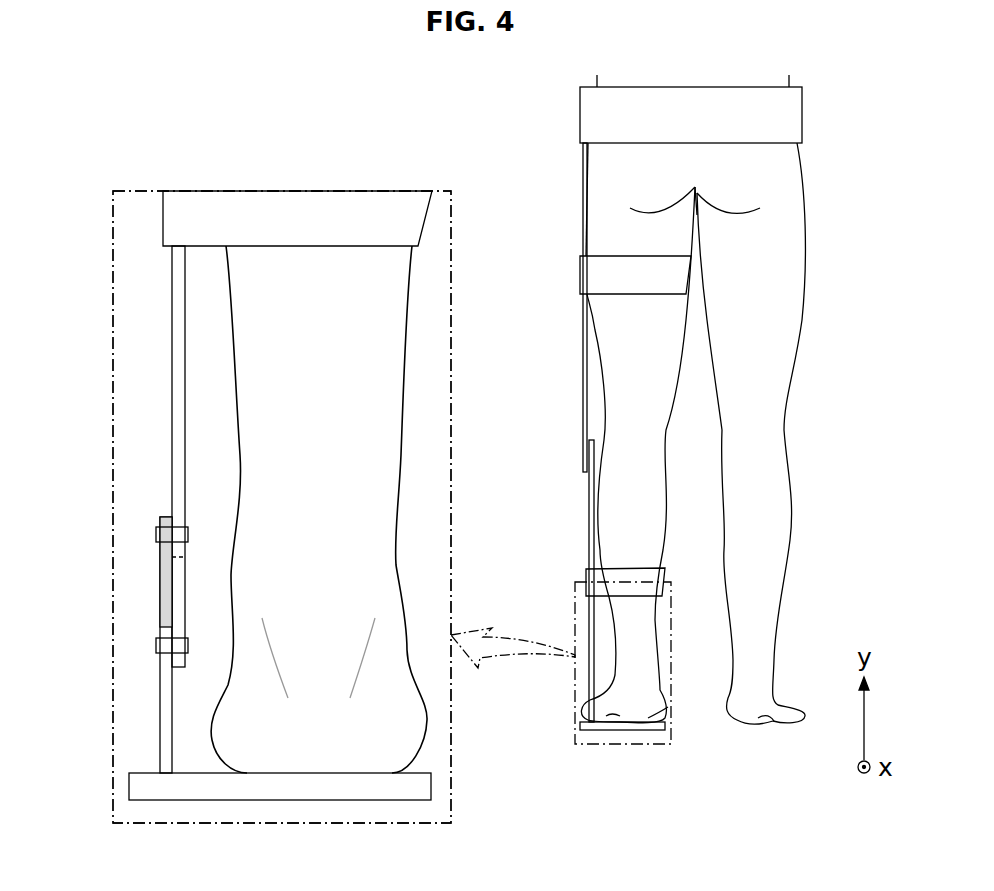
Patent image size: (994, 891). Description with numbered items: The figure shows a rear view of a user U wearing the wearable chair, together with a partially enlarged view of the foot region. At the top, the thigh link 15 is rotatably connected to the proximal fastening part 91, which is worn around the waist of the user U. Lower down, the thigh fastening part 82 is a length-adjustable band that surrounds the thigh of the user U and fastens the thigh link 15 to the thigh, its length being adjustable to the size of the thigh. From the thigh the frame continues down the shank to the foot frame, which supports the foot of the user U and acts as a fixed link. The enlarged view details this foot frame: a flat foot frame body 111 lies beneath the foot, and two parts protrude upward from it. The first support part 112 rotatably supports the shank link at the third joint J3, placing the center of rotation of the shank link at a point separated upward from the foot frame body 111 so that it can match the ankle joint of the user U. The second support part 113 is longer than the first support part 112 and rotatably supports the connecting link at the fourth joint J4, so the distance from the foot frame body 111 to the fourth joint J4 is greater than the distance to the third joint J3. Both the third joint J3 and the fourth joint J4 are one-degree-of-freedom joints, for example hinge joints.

The foot frame body 111 is at (278, 788).
The first support part 112 is at (164, 713).
The second support part 113 is at (164, 573).
The third joint J3 is at (158, 647).
The fourth joint J4 is at (158, 537).
The thigh link 15 is at (586, 374).
The thigh fastening part 82 is at (588, 280).
The proximal fastening part 91 is at (587, 118).
The user U is at (808, 200).